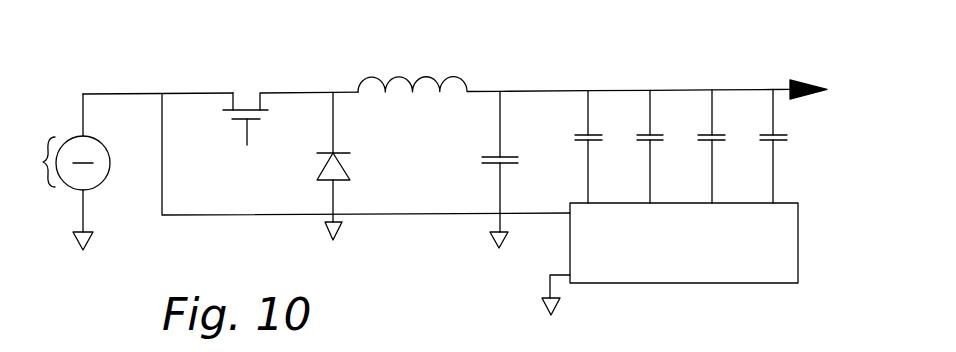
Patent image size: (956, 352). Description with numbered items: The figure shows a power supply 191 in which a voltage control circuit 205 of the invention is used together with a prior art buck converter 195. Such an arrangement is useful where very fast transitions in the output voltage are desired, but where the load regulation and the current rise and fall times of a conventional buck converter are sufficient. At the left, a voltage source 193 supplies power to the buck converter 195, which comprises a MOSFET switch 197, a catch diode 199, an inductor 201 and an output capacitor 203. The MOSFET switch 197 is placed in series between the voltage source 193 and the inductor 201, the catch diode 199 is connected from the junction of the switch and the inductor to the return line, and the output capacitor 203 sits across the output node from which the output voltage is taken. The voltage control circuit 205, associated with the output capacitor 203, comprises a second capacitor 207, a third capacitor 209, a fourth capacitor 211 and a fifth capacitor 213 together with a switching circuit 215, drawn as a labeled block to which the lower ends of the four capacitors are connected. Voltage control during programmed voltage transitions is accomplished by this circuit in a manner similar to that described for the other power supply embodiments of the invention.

The power supply 191 is at (127, 55).
The voltage source V 193 is at (105, 188).
The buck converter 195 is at (333, 50).
The MOSFET switch Q 197 is at (247, 88).
The catch diode Cr 199 is at (307, 175).
The inductor L 201 is at (457, 72).
The output capacitor C1 203 is at (495, 173).
The voltage control circuit 205 is at (670, 48).
The capacitor C2 207 is at (602, 127).
The capacitor C3 209 is at (638, 127).
The capacitor C4 211 is at (722, 130).
The capacitor C5 213 is at (763, 127).
The switching circuit 215 is at (562, 245).